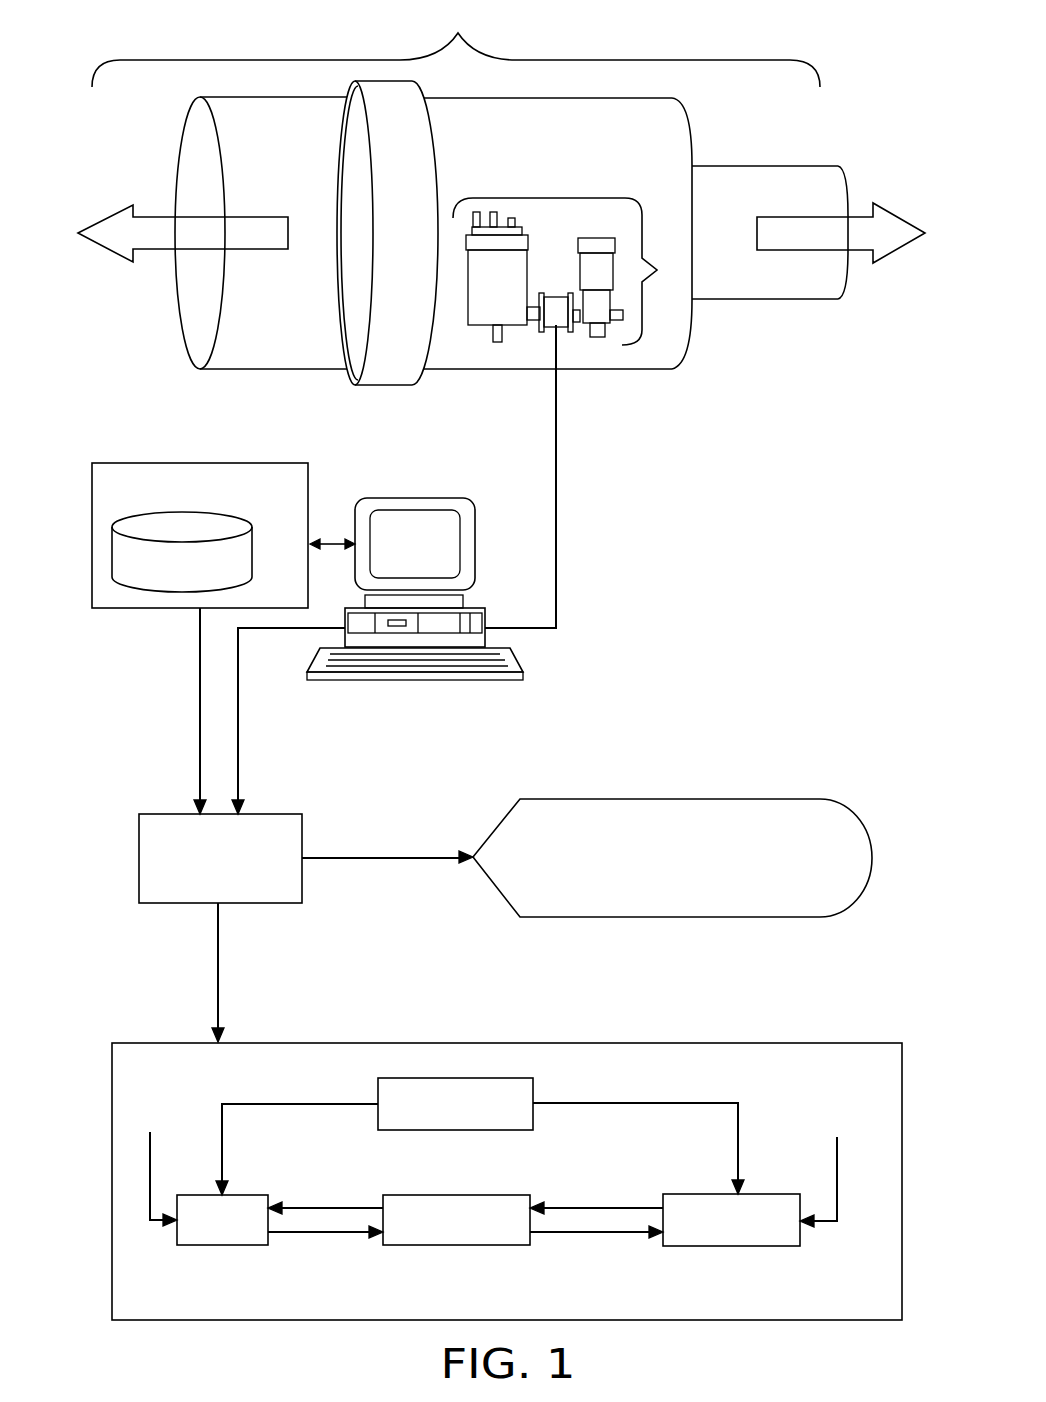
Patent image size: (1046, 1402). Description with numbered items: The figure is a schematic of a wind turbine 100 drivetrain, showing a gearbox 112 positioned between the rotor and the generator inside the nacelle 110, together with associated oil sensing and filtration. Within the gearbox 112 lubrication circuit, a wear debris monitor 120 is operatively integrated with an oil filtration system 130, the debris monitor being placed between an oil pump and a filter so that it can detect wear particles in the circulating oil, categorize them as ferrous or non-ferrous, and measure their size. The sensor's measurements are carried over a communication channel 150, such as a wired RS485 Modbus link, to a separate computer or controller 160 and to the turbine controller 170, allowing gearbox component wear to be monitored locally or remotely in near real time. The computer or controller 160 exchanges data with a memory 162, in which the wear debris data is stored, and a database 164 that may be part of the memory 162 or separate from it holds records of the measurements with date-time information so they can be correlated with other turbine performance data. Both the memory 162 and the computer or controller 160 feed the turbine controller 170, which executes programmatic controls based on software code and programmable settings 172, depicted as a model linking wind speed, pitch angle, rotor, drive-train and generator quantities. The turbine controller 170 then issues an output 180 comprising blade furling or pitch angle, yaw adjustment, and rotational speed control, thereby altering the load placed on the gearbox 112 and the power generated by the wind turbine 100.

The wind turbine 100 is at (882, 566).
The nacelle 110 is at (501, 195).
The gearbox 112 is at (558, 233).
The wear debris monitor 120 is at (540, 328).
The oil filtration system 130 is at (657, 270).
The communication channel 150 is at (558, 584).
The computer or controller 160 is at (432, 558).
The memory 162 is at (198, 463).
The database 164 is at (168, 592).
The turbine controller 170 is at (172, 814).
The software code and programmable settings 172 is at (467, 1042).
The output 180 is at (650, 799).